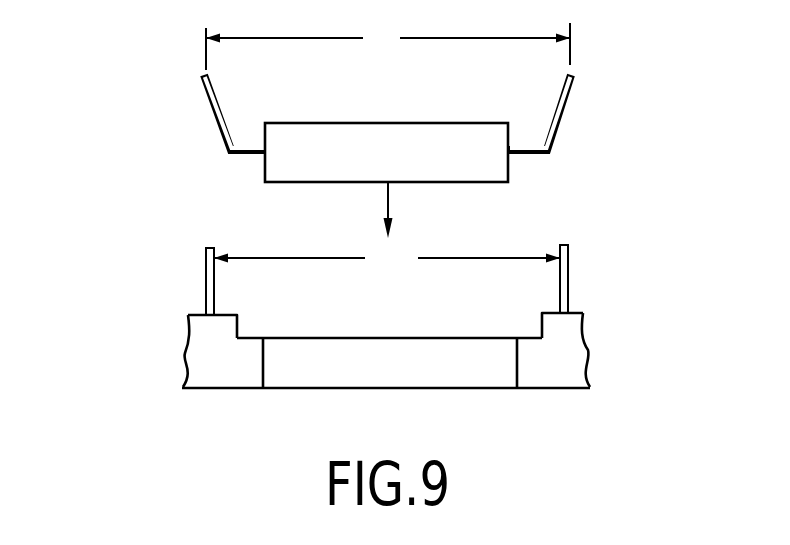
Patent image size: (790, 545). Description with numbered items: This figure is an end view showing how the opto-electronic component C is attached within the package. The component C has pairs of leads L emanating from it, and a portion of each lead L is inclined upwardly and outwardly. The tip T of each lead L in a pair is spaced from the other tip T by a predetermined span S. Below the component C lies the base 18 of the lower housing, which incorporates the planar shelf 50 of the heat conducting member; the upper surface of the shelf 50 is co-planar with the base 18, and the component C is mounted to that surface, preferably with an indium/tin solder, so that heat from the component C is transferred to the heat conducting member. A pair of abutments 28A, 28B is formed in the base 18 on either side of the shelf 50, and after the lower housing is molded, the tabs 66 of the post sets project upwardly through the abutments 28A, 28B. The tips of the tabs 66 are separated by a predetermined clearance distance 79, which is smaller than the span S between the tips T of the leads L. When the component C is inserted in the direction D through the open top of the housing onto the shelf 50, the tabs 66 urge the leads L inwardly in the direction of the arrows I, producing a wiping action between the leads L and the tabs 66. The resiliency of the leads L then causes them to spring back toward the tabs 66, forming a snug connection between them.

The span S is at (388, 46).
The tip T is at (202, 77).
The arrows I is at (185, 107).
The leads L is at (393, 109).
The component C is at (378, 164).
The direction D is at (388, 197).
The clearance distance 79 is at (387, 258).
The tabs 66 is at (207, 280).
The base 18 is at (572, 363).
The abutment 28A is at (200, 332).
The abutment 28B is at (565, 327).
The planar shelf 50 is at (450, 365).